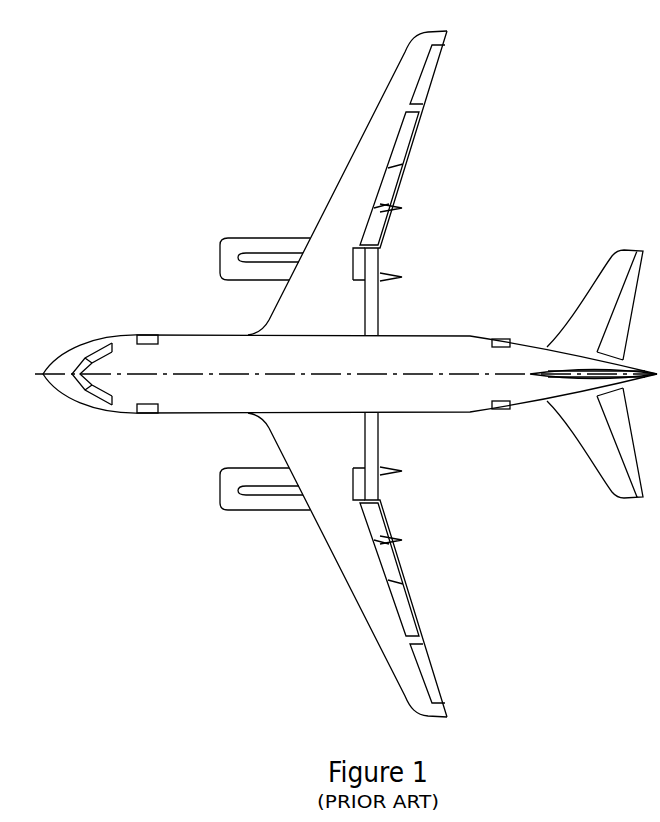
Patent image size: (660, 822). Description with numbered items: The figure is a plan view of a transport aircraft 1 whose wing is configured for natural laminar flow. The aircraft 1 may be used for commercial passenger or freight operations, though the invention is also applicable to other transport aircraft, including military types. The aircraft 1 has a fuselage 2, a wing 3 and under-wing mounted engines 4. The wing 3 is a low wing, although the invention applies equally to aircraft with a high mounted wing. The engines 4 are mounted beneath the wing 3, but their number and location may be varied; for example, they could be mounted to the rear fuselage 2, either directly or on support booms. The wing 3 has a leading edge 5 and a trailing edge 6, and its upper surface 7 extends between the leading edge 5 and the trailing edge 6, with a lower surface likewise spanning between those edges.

The transport aircraft 1 is at (142, 192).
The fuselage 2 is at (177, 397).
The wing 3 is at (375, 620).
The engines 4 is at (258, 248).
The leading edge 5 is at (368, 118).
The trailing edge 6 is at (407, 158).
The upper surface 7 is at (312, 295).